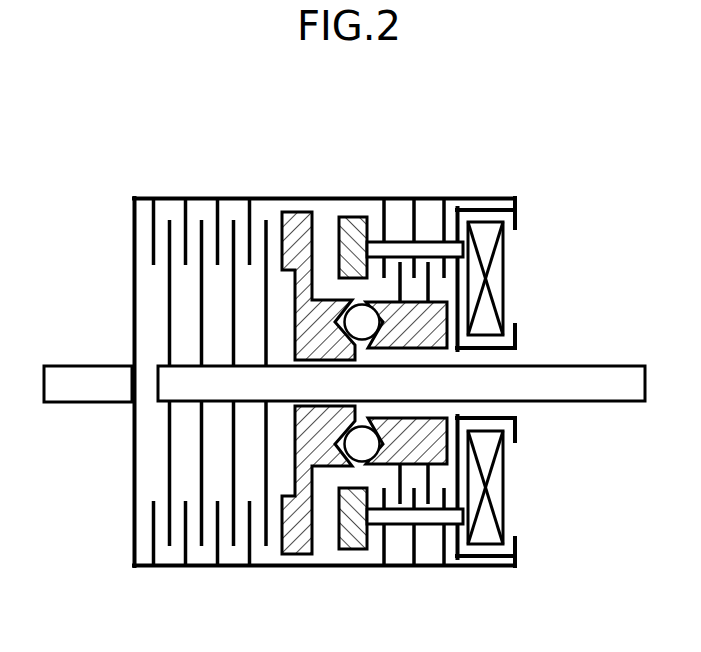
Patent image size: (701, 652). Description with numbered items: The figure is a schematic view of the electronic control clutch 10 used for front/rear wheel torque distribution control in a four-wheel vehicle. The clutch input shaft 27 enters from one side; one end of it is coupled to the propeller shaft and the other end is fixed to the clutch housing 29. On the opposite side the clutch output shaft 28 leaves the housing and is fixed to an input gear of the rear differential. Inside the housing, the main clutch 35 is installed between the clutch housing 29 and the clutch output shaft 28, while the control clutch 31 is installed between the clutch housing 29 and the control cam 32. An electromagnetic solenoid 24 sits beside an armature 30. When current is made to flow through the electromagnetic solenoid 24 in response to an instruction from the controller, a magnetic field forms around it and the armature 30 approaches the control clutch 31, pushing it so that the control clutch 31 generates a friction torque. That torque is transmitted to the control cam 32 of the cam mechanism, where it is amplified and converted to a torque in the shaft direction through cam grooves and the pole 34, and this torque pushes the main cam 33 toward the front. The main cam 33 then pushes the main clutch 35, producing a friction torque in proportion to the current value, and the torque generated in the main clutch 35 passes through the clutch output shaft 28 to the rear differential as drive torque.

The electronic control clutch 10 is at (311, 175).
The electromagnetic solenoid 24 is at (505, 283).
The clutch input shaft 27 is at (78, 363).
The clutch output shaft 28 is at (595, 364).
The clutch housing 29 is at (192, 197).
The armature 30 is at (348, 217).
The control clutch 31 is at (428, 212).
The control cam 32 is at (413, 463).
The main cam 33 is at (310, 533).
The pole 34 is at (363, 458).
The main clutch 35 is at (198, 527).